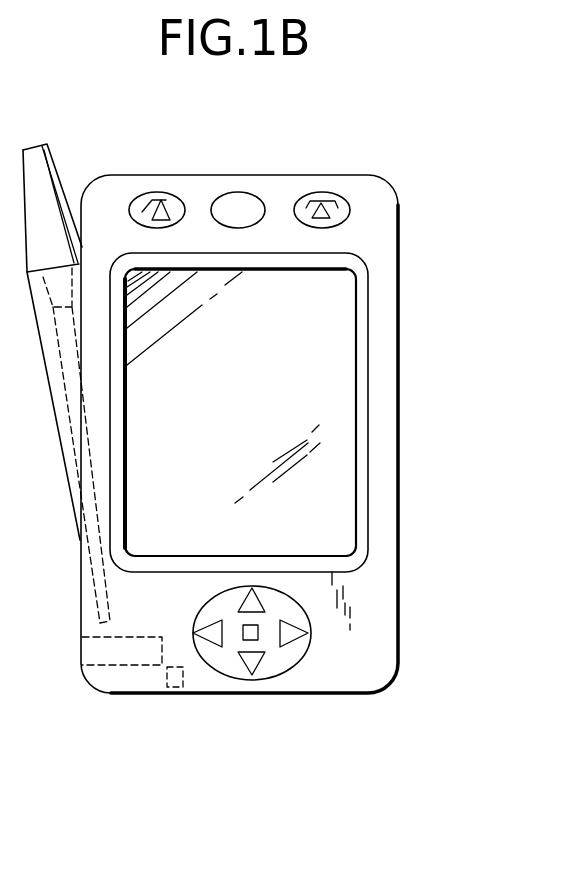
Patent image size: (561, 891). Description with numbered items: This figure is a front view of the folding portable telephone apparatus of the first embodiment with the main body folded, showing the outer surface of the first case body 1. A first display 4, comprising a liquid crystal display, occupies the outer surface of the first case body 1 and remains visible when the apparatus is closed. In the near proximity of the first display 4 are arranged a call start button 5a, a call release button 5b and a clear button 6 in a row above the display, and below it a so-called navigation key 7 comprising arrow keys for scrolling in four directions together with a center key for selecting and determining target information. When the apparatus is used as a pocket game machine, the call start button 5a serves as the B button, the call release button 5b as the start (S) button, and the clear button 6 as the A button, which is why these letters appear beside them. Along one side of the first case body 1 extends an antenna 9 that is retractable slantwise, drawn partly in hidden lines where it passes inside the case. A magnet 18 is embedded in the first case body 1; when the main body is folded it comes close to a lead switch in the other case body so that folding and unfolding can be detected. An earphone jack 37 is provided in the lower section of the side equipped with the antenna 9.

The first case body 1 is at (378, 630).
The first display 4 is at (325, 322).
The call start button 5a is at (160, 197).
The call release button 5b is at (322, 195).
The clear button 6 is at (245, 197).
The navigation key 7 is at (277, 657).
The antenna 9 is at (55, 184).
The magnet 18 is at (182, 690).
The earphone jack 37 is at (102, 667).